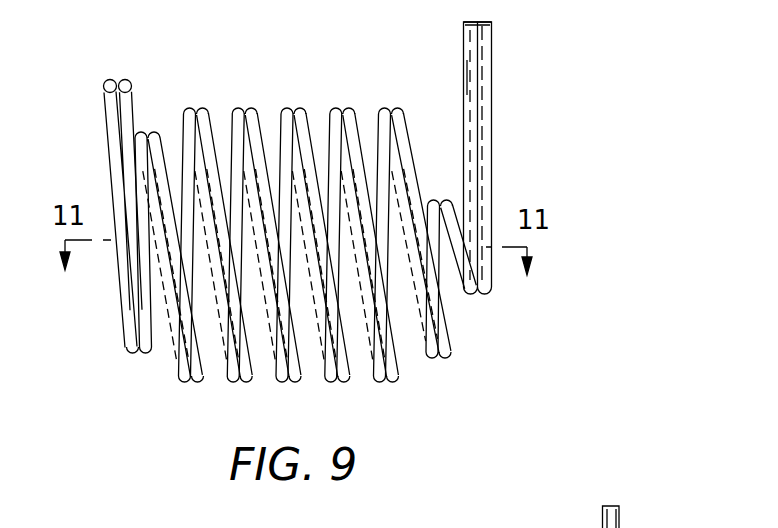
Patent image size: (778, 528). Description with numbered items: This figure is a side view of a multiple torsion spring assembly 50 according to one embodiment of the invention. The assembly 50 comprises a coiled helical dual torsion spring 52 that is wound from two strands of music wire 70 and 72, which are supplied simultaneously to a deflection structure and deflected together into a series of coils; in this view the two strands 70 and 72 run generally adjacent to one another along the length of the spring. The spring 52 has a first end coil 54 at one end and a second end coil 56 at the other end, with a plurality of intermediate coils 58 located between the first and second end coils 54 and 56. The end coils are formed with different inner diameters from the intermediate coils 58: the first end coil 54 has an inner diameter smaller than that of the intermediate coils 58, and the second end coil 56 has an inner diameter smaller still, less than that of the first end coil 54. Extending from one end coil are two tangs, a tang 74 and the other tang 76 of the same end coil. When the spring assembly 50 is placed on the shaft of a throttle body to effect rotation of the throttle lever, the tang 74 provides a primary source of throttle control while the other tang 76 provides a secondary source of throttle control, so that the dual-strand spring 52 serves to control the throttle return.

The multiple torsion spring assembly 50 is at (597, 133).
The coiled helical dual torsion spring 52 is at (265, 91).
The first end coil 54 is at (132, 352).
The second end coil 56 is at (485, 306).
The intermediate coils 58 is at (226, 392).
The strand of music wire 70 is at (483, 183).
The strand of music wire 72 is at (470, 146).
The tang 74 is at (485, 53).
The tang 76 is at (472, 76).